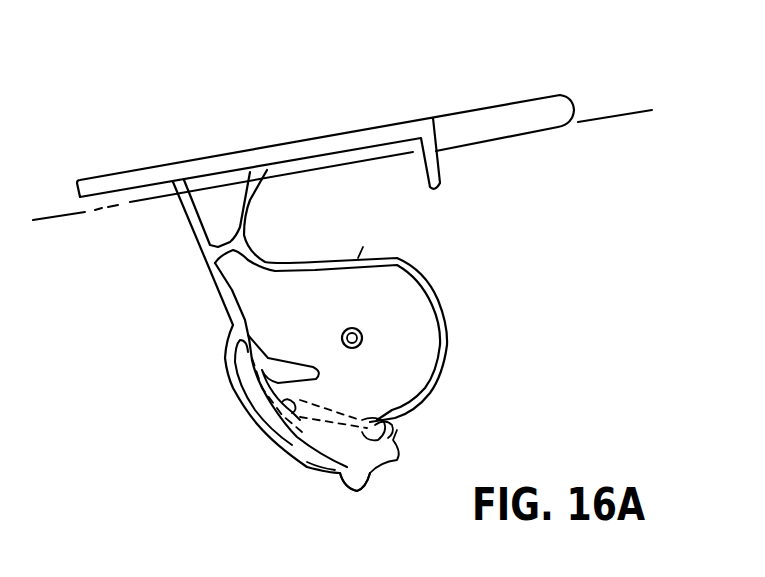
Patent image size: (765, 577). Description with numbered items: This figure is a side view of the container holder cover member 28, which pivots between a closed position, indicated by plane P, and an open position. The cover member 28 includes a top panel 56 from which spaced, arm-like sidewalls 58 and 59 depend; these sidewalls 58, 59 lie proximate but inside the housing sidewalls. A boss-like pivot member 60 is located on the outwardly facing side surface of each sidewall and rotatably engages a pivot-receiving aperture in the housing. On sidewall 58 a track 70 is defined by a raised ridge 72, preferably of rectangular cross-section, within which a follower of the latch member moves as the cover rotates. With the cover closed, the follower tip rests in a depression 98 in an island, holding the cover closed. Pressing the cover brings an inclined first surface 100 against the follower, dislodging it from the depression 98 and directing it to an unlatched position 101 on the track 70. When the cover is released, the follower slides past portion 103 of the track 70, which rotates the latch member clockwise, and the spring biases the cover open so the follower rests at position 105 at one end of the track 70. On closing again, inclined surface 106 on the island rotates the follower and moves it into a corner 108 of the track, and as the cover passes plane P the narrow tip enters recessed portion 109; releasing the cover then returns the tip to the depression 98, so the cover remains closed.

The cover member 28 is at (570, 84).
The top panel 56 is at (465, 110).
The sidewall 58 is at (333, 253).
The sidewall 59 is at (363, 247).
The pivot member 60 is at (362, 328).
The track 70 is at (300, 437).
The raised ridge 72 is at (237, 398).
The depression 98 is at (368, 493).
The inclined first surface 100 is at (372, 415).
The unlatched position 101 is at (397, 428).
The portion of track 103 is at (295, 418).
The position 105 is at (253, 340).
The inclined surface 106 is at (307, 462).
The corner 108 is at (347, 490).
The recessed portion 109 is at (387, 465).
The plane P is at (638, 113).